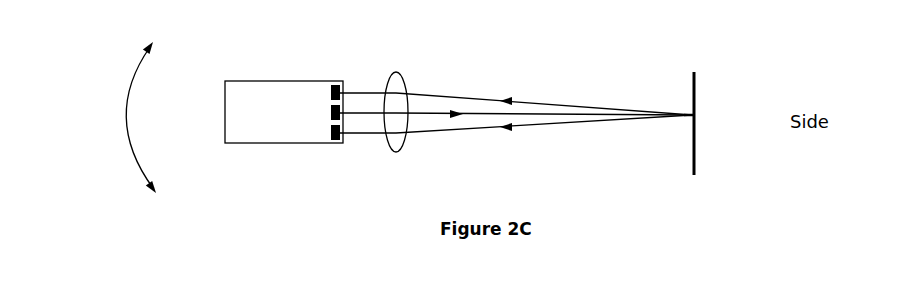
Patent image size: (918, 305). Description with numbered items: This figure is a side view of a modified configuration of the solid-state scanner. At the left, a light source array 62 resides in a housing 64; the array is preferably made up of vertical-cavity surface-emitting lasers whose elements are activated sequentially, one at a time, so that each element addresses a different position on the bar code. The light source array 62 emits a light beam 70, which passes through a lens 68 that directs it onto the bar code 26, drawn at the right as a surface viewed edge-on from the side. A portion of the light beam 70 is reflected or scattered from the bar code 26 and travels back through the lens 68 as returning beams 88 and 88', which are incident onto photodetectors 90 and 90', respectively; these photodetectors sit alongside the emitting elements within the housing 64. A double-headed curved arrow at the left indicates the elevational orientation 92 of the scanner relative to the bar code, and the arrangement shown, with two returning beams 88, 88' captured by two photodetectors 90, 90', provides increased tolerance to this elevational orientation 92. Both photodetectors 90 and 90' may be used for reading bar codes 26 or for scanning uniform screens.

The bar code 26 is at (695, 157).
The light source array 62 is at (330, 107).
The housing 64 is at (237, 92).
The lens 68 is at (392, 152).
The light beam 70 is at (440, 113).
The returning beam 88 is at (516, 152).
The returning beam 88' is at (516, 86).
The photodetector 90 is at (299, 161).
The photodetector 90' is at (362, 71).
The elevational orientation 92 is at (130, 92).